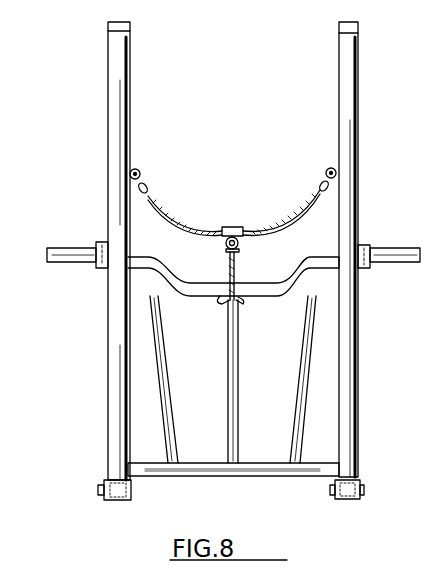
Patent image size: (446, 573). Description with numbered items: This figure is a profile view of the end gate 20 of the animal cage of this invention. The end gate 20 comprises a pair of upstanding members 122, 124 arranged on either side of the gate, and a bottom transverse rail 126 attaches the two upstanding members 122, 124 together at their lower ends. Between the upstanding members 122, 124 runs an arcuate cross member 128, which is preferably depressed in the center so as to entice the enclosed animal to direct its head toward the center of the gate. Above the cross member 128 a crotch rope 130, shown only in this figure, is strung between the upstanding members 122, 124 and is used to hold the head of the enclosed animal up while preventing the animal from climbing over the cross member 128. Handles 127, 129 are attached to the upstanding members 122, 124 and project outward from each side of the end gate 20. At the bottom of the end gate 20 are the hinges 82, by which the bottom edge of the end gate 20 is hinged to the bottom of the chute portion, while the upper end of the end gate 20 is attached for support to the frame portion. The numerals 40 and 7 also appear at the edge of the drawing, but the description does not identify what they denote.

The end gate 20 is at (100, 95).
The upstanding member 122 is at (343, 70).
The upstanding member 124 is at (121, 77).
The bottom transverse rail 126 is at (271, 477).
The arcuate cross member 128 is at (295, 273).
The crotch rope 130 is at (240, 228).
The handle 129 is at (70, 248).
The handle 127 is at (398, 250).
The hinge 82 is at (131, 488).
The frame member 40 is at (6, 253).
The frame member 7 is at (6, 331).